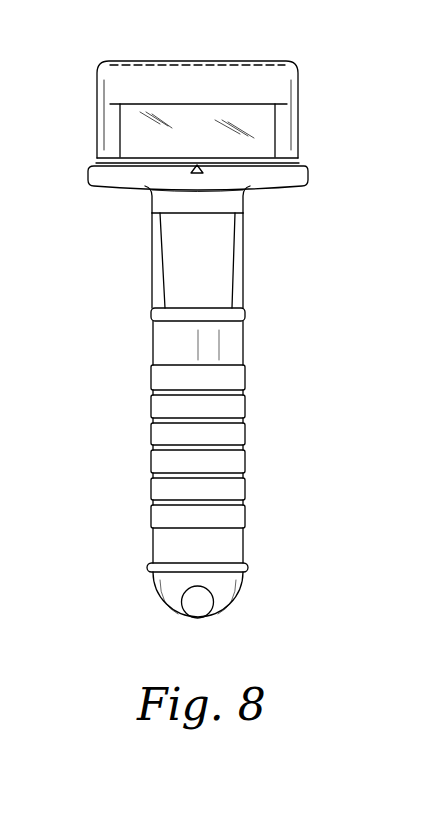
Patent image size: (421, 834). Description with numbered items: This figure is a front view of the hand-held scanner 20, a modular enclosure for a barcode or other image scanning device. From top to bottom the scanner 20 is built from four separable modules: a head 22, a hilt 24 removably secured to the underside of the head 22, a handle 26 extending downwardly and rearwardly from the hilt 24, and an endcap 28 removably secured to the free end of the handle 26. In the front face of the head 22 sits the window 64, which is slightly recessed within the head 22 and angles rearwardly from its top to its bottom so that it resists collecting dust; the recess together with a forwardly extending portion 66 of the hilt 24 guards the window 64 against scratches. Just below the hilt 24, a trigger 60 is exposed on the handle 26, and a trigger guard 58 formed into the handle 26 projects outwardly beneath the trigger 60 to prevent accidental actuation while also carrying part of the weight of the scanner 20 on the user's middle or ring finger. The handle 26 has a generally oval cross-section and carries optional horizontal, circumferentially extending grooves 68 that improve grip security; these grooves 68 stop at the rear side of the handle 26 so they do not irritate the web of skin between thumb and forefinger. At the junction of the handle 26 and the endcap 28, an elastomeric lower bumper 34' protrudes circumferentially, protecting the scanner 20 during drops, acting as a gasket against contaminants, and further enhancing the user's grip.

The hand-held scanner 20 is at (100, 420).
The head 22 is at (299, 95).
The hilt 24 is at (88, 173).
The handle 26 is at (152, 332).
The endcap 28 is at (237, 603).
The lower bumper 34' is at (237, 574).
The trigger guard 58 is at (245, 310).
The trigger 60 is at (220, 260).
The window 64 is at (267, 128).
The forwardly extending portion 66 is at (250, 188).
The grooves 68 is at (245, 390).